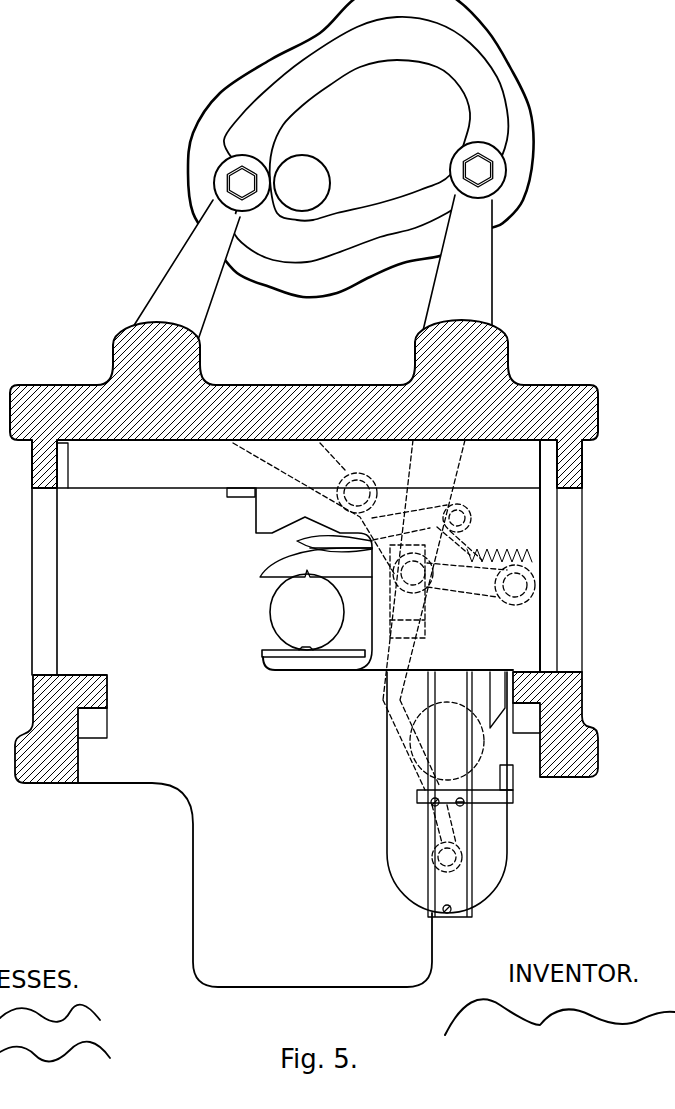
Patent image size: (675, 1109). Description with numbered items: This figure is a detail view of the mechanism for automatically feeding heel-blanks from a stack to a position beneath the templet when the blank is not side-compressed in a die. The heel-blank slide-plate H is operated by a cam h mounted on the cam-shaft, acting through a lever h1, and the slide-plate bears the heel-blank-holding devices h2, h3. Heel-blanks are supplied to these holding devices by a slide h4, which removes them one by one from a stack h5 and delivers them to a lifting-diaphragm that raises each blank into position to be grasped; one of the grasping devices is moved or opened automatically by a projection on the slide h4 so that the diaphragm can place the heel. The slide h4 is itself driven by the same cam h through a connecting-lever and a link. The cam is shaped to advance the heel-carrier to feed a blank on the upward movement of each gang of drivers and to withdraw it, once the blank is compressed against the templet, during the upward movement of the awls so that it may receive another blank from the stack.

The cam h is at (503, 133).
The lever h1 is at (470, 292).
The heel-blank-holding device h2 is at (290, 565).
The heel-blank-holding device h3 is at (288, 660).
The slide h4 is at (445, 813).
The stack h5 is at (483, 778).
The heel-blank slide-plate H is at (373, 668).